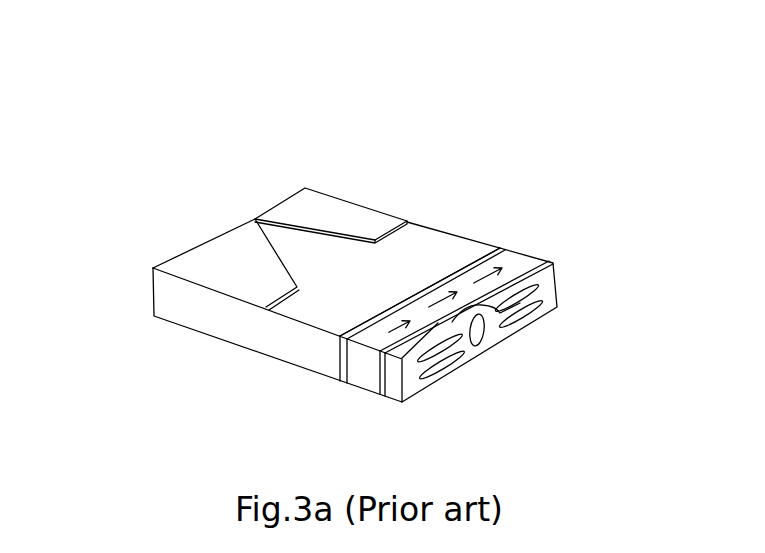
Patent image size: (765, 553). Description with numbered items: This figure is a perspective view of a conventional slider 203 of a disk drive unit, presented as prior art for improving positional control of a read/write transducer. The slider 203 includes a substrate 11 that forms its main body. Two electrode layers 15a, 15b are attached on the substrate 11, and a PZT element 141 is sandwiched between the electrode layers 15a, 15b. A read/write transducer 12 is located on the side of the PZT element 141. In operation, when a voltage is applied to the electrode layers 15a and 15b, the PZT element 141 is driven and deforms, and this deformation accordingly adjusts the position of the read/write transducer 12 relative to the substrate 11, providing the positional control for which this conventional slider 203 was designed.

The slider 203 is at (97, 27).
The substrate 11 is at (223, 323).
The PZT element 141 is at (512, 252).
The electrode layer 15a is at (502, 250).
The electrode layer 15b is at (534, 255).
The read/write transducer 12 is at (485, 333).